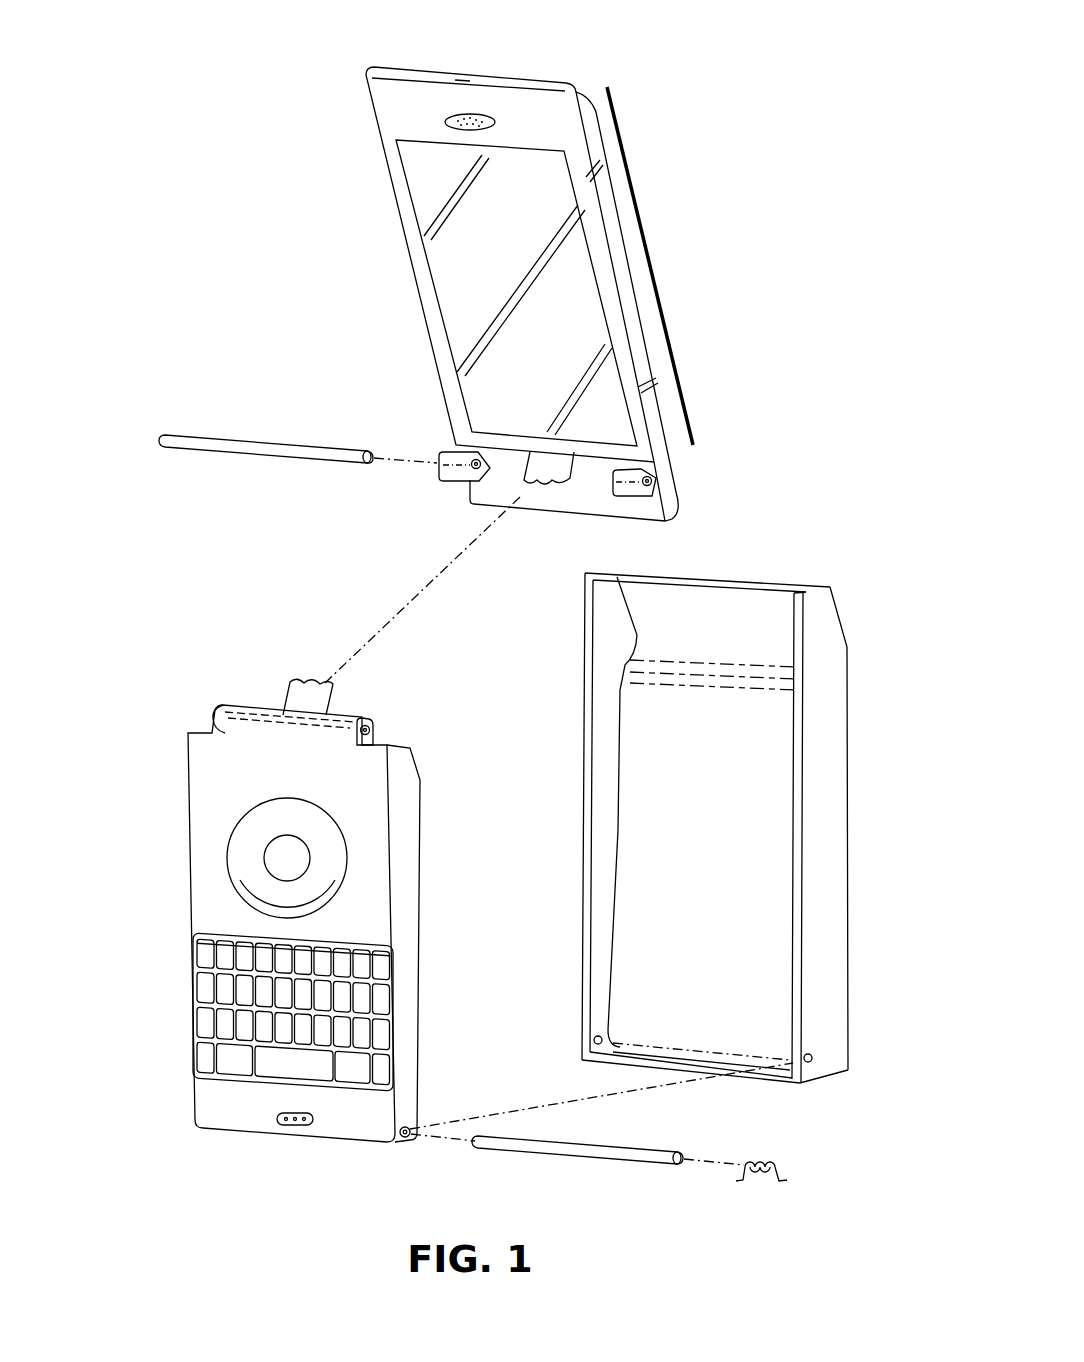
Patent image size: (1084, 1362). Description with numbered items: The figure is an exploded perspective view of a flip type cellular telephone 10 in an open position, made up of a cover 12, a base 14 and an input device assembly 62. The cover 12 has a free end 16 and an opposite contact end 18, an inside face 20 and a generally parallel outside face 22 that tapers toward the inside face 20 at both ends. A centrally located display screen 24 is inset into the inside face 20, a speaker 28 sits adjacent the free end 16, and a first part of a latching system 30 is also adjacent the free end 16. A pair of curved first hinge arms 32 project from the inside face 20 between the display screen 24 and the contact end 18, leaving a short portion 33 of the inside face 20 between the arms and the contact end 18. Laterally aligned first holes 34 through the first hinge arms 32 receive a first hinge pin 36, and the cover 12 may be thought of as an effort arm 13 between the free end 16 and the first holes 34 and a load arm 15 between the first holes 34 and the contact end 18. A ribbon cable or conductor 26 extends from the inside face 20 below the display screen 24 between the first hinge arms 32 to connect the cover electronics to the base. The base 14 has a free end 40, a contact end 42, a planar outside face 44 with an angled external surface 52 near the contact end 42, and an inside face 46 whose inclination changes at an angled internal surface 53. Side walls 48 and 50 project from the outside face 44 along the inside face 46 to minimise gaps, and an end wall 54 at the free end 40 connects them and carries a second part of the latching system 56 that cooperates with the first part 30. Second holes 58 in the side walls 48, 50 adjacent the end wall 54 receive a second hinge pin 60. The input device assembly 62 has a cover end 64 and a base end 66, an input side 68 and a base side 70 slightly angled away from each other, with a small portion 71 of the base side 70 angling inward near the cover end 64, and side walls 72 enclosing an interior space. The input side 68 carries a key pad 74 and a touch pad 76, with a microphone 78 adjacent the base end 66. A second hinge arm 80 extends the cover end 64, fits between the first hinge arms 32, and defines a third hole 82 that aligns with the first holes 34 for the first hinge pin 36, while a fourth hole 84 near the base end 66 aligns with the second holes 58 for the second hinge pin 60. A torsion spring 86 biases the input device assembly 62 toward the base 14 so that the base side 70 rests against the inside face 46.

The cellular telephone 10 is at (788, 174).
The cover 12 is at (594, 138).
The effort arm 13 is at (664, 262).
The base 14 is at (714, 824).
The load arm 15 is at (700, 455).
The free end 16 is at (533, 79).
The contact end 18 is at (490, 508).
The inside face 20 is at (600, 266).
The outside face 22 is at (621, 204).
The display screen 24 is at (433, 292).
The conductor 26 is at (545, 486).
The speaker 28 is at (445, 118).
The first part of the latching system 30 is at (462, 79).
The first hinge arms 32 is at (441, 478).
The portion of the inside face 33 is at (482, 500).
The first holes 34 is at (481, 462).
The first hinge pin 36 is at (272, 440).
The free end 40 is at (598, 1076).
The contact end 42 is at (727, 579).
The outside face 44 is at (850, 764).
The inside face 46 is at (640, 792).
The side wall 48 is at (603, 857).
The side wall 50 is at (830, 852).
The angled external surface 52 is at (838, 600).
The angled internal surface 53 is at (770, 600).
The end wall 54 is at (755, 1080).
The second part of the latching system 56 is at (688, 1049).
The second holes 58 is at (595, 1037).
The second hinge pin 60 is at (566, 1158).
The input device assembly 62 is at (439, 917).
The cover end 64 is at (210, 730).
The base end 66 is at (340, 1146).
The input side 68 is at (205, 779).
The base side 70 is at (422, 839).
The small portion of the base side 71 is at (418, 765).
The side walls 72 is at (187, 913).
The key pad 74 is at (190, 961).
The touch pad 76 is at (318, 828).
The microphone 78 is at (285, 1126).
The second hinge arm 80 is at (233, 716).
The third hole 82 is at (370, 727).
The fourth hole 84 is at (407, 1140).
The torsion spring 86 is at (760, 1178).